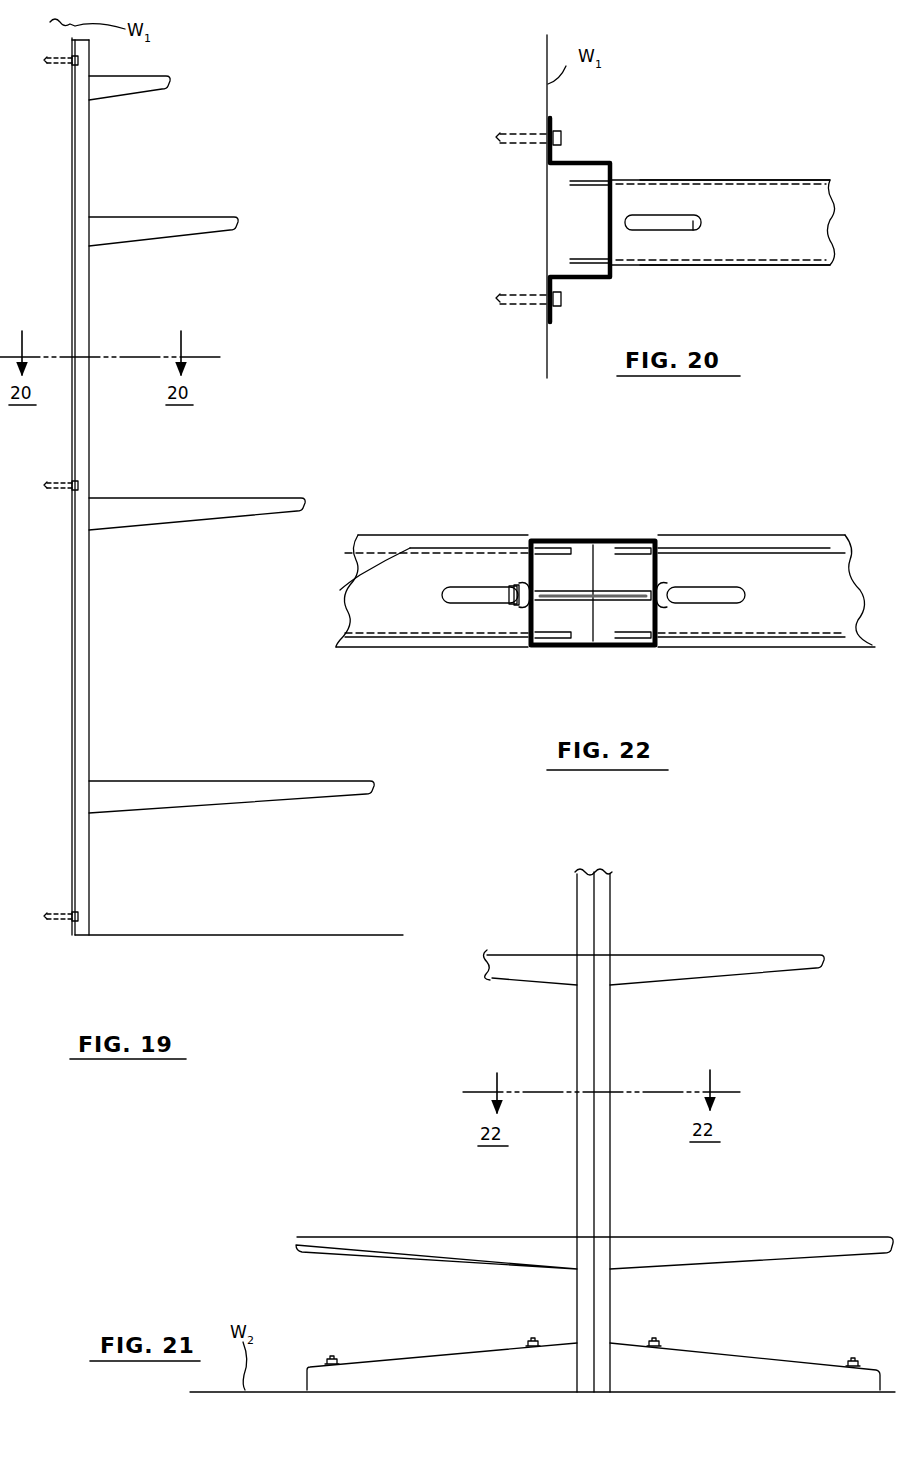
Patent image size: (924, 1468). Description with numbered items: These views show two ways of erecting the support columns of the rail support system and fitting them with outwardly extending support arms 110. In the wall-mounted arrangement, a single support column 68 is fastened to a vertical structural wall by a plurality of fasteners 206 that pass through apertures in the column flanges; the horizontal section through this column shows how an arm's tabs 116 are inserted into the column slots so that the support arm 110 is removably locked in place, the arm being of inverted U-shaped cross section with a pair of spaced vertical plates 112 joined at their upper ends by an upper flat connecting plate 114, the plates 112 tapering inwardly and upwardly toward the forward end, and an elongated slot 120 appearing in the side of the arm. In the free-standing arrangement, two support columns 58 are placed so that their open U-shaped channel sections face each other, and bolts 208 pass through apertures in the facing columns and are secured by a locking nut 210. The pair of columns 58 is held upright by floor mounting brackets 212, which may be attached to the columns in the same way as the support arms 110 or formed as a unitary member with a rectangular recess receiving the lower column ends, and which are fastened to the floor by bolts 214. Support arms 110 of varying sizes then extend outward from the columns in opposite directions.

In FIG. 22, the support column 58 is at (552, 652).
In FIG. 21, the support column 58 is at (576, 1036).
In FIG. 19, the support column 68 is at (96, 640).
In FIG. 20, the support column 68 is at (592, 158).
In FIG. 19, the support arm 110 is at (160, 74).
In FIG. 20, the support arm 110 is at (722, 178).
In FIG. 22, the support arm 110 is at (436, 545).
In FIG. 21, the support arm 110 is at (540, 952).
In FIG. 20, the vertically disposed plate 112 is at (762, 268).
In FIG. 20, the upper flat connecting plate 114 is at (796, 200).
In FIG. 20, the locating tabs 116 is at (572, 258).
In FIG. 22, the locating tabs 116 is at (545, 546).
In FIG. 20, the slot 120 is at (702, 223).
In FIG. 19, the fastener 206 is at (58, 920).
In FIG. 20, the fastener 206 is at (562, 130).
In FIG. 22, the bolt 208 is at (578, 590).
In FIG. 22, the locking nut 210 is at (518, 602).
In FIG. 22, the floor mounting bracket 212 is at (372, 545).
In FIG. 21, the floor mounting bracket 212 is at (455, 1368).
In FIG. 21, the bolt 214 is at (335, 1358).